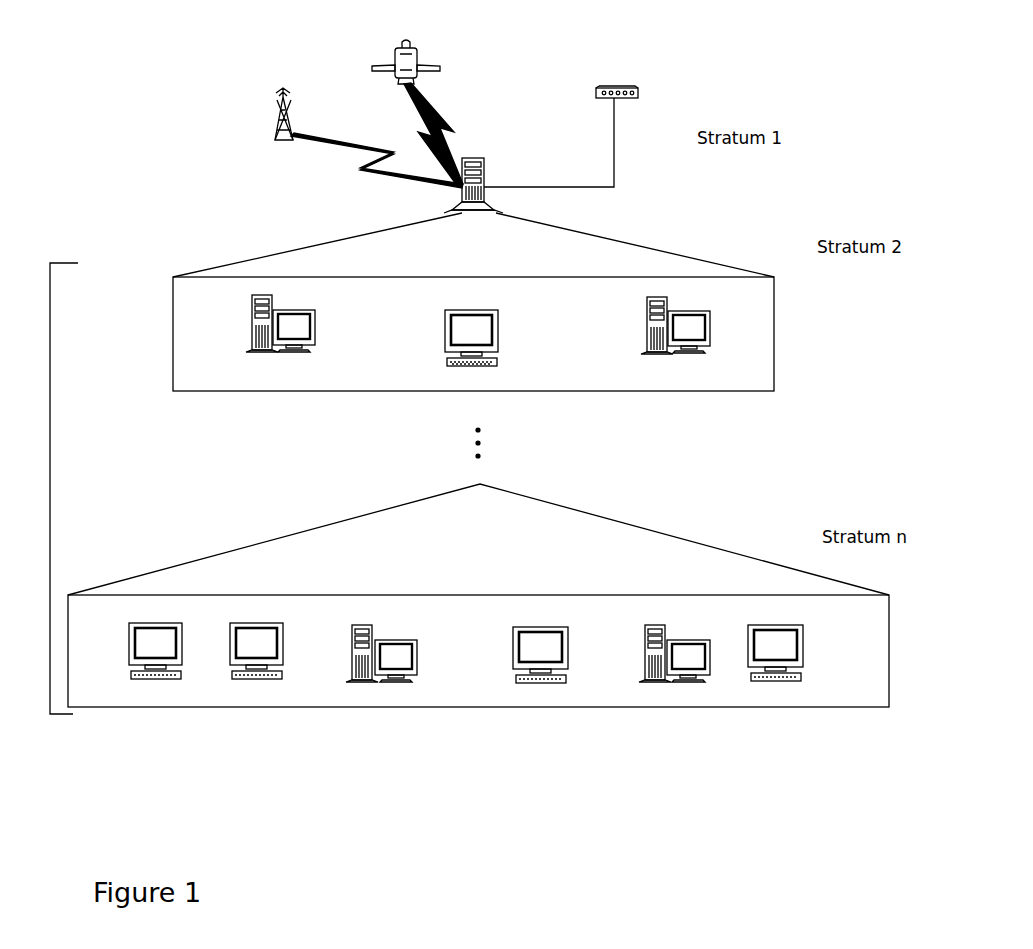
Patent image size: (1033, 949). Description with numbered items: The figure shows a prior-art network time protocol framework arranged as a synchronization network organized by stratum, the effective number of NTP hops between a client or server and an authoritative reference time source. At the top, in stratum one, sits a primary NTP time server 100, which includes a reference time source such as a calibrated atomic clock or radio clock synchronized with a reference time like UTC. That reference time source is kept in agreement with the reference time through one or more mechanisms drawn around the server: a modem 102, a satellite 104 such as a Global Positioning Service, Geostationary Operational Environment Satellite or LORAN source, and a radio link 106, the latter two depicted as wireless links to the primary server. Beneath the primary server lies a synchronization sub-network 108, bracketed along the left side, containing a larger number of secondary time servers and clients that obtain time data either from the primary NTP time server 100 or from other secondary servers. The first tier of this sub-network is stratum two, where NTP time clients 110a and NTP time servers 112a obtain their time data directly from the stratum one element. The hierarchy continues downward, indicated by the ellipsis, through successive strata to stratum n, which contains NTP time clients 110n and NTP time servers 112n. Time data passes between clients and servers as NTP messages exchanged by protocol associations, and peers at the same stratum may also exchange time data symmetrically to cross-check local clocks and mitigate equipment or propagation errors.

The primary NTP time server 100 is at (486, 179).
The modem 102 is at (576, 115).
The satellite 104 is at (424, 106).
The radio link 106 is at (369, 117).
The synchronization sub-network 108 is at (43, 488).
The NTP time client 110a is at (504, 334).
The NTP time server 112a is at (508, 322).
The NTP time client 110n is at (488, 642).
The NTP time server 112n is at (526, 643).